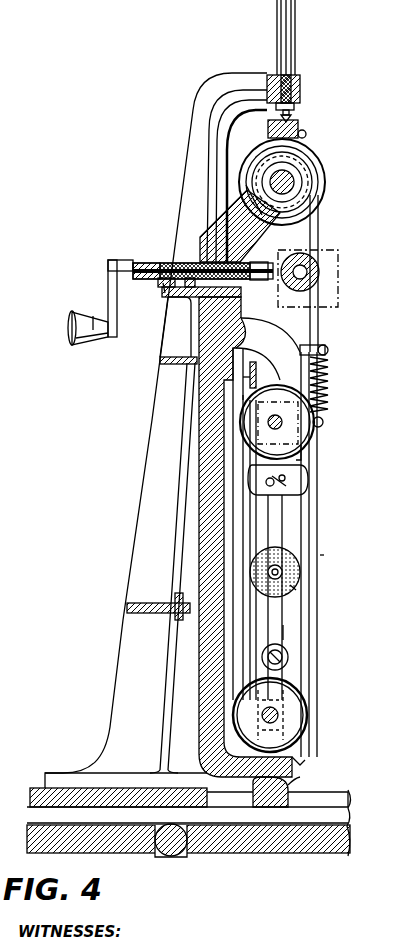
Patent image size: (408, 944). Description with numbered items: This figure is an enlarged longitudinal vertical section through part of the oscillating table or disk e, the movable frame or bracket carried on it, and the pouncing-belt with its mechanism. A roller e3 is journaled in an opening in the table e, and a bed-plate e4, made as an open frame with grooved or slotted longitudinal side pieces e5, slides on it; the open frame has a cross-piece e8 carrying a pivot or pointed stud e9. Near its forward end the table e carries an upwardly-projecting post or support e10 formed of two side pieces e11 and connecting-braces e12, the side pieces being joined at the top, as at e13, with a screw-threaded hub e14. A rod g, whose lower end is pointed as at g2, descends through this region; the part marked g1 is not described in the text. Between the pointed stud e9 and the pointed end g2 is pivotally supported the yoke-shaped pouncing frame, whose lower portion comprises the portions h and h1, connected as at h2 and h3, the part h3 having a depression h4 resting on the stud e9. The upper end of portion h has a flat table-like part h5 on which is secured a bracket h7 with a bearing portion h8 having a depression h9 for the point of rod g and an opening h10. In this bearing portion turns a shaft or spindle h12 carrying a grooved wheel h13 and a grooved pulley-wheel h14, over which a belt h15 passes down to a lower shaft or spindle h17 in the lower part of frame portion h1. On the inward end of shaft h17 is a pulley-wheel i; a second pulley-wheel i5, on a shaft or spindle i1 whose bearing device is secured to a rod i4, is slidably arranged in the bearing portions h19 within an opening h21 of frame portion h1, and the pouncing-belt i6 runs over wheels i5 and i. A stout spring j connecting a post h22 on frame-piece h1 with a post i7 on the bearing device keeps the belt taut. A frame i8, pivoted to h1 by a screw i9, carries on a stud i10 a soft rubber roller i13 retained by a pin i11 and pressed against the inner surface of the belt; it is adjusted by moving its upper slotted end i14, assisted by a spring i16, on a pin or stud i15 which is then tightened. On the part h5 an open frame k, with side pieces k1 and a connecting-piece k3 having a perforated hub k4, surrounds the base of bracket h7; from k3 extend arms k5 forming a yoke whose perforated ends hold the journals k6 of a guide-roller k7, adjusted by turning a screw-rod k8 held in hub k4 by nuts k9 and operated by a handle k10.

The oscillating table or disk e is at (329, 850).
The roller e3 is at (172, 850).
The bed-plate e4 is at (33, 795).
The longitudinal side pieces e5 is at (346, 800).
The cross-piece e8 is at (296, 797).
The pointed stud e9 is at (300, 788).
The post or support e10 is at (140, 500).
The side pieces e11 is at (183, 512).
The connecting-braces e12 is at (150, 608).
The top connection e13 is at (258, 72).
The screw-threaded hub e14 is at (291, 90).
The rod g is at (295, 8).
The collar g1 is at (296, 106).
The pointed end g2 is at (296, 116).
The frame portion h is at (210, 470).
The frame portion h1 is at (305, 515).
The connecting part h2 is at (262, 336).
The connecting part h3 is at (304, 766).
The depression h4 is at (288, 782).
The flat table-like part h5 is at (184, 306).
The bracket h7 is at (215, 222).
The bearing portion h8 is at (270, 130).
The depression h9 is at (305, 130).
The opening h10 is at (258, 190).
The shaft or spindle h12 is at (292, 183).
The grooved wheel h13 is at (310, 182).
The grooved pulley-wheel h14 is at (313, 200).
The belt h15 is at (321, 236).
The shaft or spindle h17 is at (280, 727).
The bearing portions h19 is at (243, 397).
The opening h21 is at (306, 458).
The post h22 is at (321, 347).
The pulley-wheel i is at (282, 420).
The shaft or spindle i1 is at (284, 540).
The rod i4 is at (243, 377).
The second pulley-wheel i5 is at (300, 438).
The pouncing-belt i6 is at (324, 556).
The post i7 is at (323, 419).
The frame i8 is at (284, 630).
The screw i9 is at (290, 656).
The stud i10 is at (286, 567).
The pin i11 is at (283, 575).
The roller i13 is at (296, 590).
The upper slotted end i14 is at (293, 495).
The pin or stud i15 is at (292, 480).
The spring i16 is at (250, 538).
The spring j is at (329, 386).
The open frame k is at (165, 278).
The side pieces k1 is at (270, 270).
The connecting-piece k3 is at (168, 291).
The perforated hub k4 is at (178, 262).
The arms k5 is at (300, 292).
The journals k6 is at (308, 279).
The guide-roller k7 is at (316, 272).
The screw-rod k8 is at (143, 263).
The nuts k9 is at (166, 270).
The handle k10 is at (115, 300).